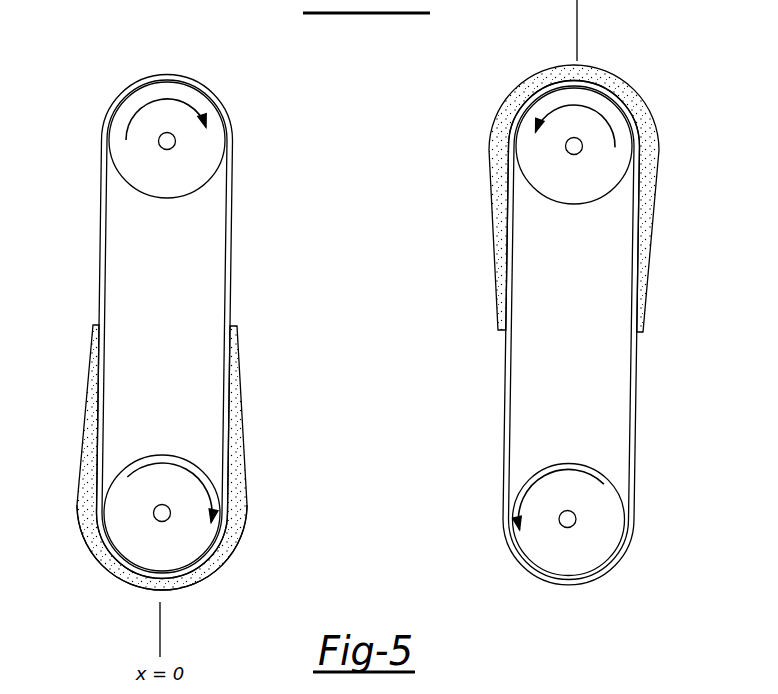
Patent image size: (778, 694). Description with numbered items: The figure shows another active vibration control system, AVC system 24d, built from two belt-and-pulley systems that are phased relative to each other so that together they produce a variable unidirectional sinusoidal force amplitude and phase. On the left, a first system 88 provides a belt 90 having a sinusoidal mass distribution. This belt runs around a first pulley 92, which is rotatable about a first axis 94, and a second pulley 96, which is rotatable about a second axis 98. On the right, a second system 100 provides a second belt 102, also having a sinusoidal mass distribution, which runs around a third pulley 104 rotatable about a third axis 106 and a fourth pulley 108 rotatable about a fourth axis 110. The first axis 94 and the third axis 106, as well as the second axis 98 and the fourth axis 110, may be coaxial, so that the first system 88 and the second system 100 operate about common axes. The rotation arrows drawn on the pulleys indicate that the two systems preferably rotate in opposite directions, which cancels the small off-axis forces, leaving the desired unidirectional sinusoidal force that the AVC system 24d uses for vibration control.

The AVC system 24d is at (360, 105).
The first system 88 is at (72, 63).
The belt 90 is at (93, 350).
The first pulley 92 is at (118, 534).
The first axis 94 is at (153, 513).
The second pulley 96 is at (170, 198).
The second axis 98 is at (176, 142).
The second system 100 is at (658, 67).
The second belt 102 is at (647, 283).
The third pulley 104 is at (610, 530).
The third axis 106 is at (567, 528).
The fourth pulley 108 is at (577, 204).
The fourth axis 110 is at (565, 146).